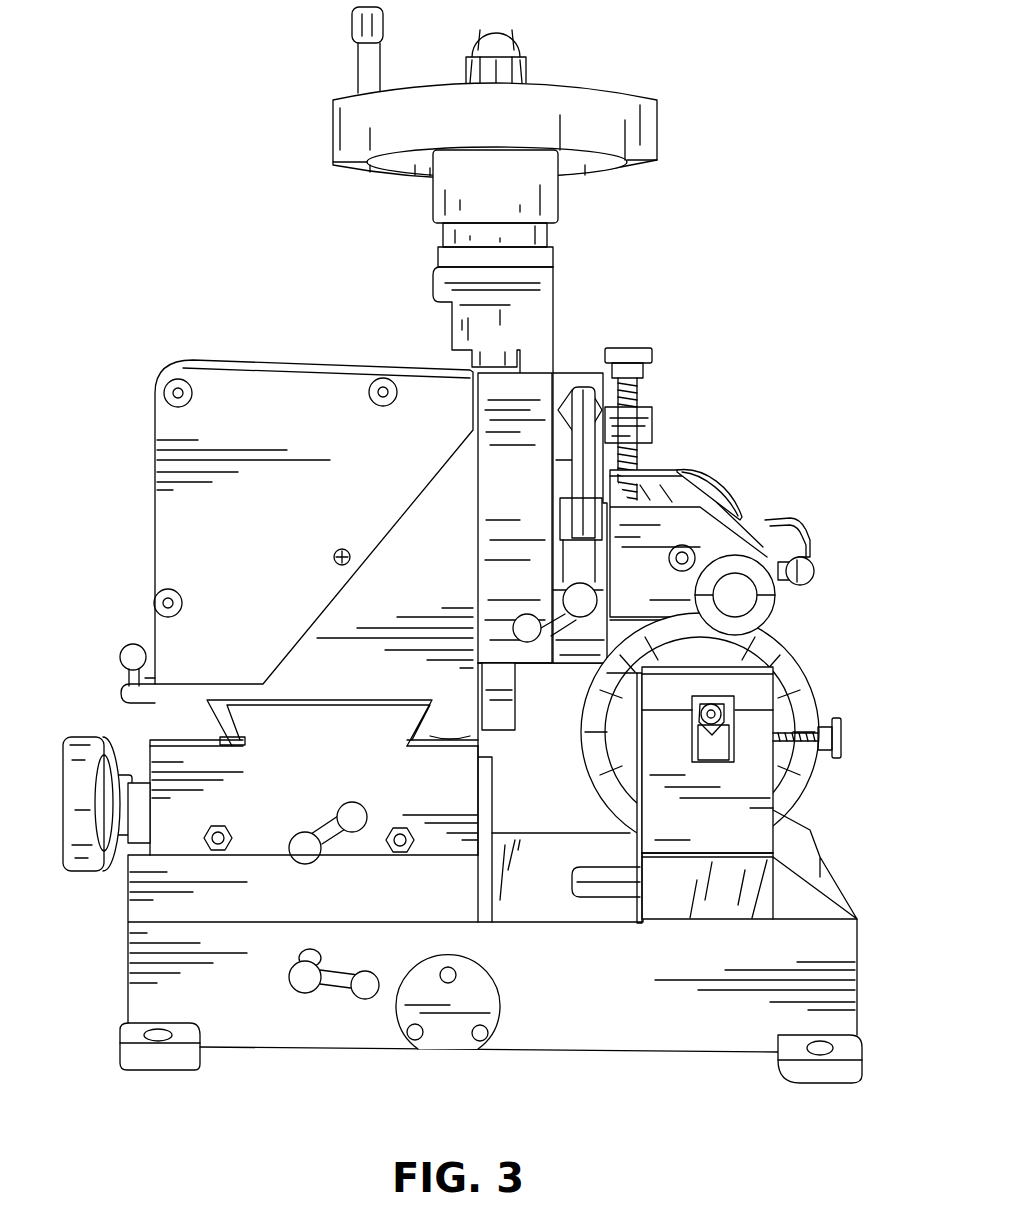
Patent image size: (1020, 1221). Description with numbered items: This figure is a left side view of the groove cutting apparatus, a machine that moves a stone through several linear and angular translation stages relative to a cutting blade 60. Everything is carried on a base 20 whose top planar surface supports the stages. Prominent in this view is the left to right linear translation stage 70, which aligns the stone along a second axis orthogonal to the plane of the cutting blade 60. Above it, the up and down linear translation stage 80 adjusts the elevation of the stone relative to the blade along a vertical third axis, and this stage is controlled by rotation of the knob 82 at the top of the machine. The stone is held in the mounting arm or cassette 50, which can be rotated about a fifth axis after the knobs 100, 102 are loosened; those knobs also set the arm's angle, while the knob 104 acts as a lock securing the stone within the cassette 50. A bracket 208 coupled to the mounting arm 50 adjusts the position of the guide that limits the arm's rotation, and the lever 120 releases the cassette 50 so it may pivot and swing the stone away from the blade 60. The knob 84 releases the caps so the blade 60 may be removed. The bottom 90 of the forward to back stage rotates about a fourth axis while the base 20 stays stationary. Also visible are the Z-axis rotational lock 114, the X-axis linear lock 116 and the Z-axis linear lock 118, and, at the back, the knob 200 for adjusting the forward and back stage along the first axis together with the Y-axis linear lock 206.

The base 20 is at (832, 945).
The mounting arm or cassette 50 is at (700, 470).
The cutting blade 60 is at (795, 633).
The left to right linear translation stage 70 is at (247, 740).
The up and down linear translation stage 80 is at (503, 707).
The knob 82 is at (543, 101).
The knob 84 is at (840, 727).
The bottom of the forward to back linear translation stage 90 is at (455, 907).
The knob 100 is at (657, 353).
The knob 102 is at (622, 347).
The knob 104 is at (812, 562).
The Z-axis rotational lock 114 is at (297, 982).
The X linear lock 116 is at (303, 862).
The Z linear lock 118 is at (510, 614).
The lever 120 is at (580, 393).
The knob 200 is at (68, 745).
The Y-axis linear lock 206 is at (128, 645).
The bracket 208 is at (780, 530).